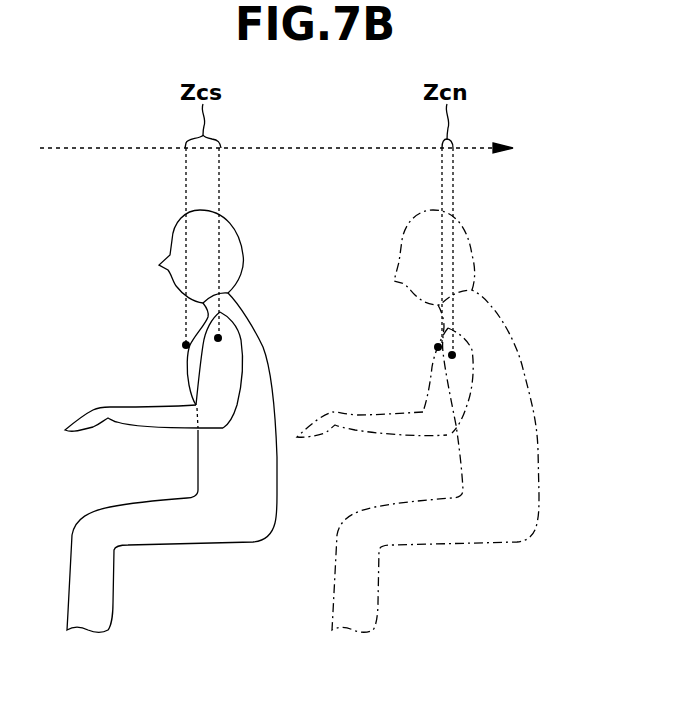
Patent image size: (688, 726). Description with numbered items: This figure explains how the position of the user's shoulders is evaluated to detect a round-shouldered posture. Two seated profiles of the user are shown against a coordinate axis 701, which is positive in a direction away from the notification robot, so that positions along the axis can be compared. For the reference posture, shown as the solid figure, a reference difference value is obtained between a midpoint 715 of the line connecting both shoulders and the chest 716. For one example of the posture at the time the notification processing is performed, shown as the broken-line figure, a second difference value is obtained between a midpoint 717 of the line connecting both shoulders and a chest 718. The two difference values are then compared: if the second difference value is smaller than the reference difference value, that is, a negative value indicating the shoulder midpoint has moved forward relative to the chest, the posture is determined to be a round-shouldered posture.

The coordinate axis 701 is at (97, 148).
The midpoint of the line connecting both shoulders 715 is at (222, 337).
The chest 716 is at (182, 345).
The midpoint of the line connecting both shoulders 717 is at (456, 354).
The chest 718 is at (434, 346).